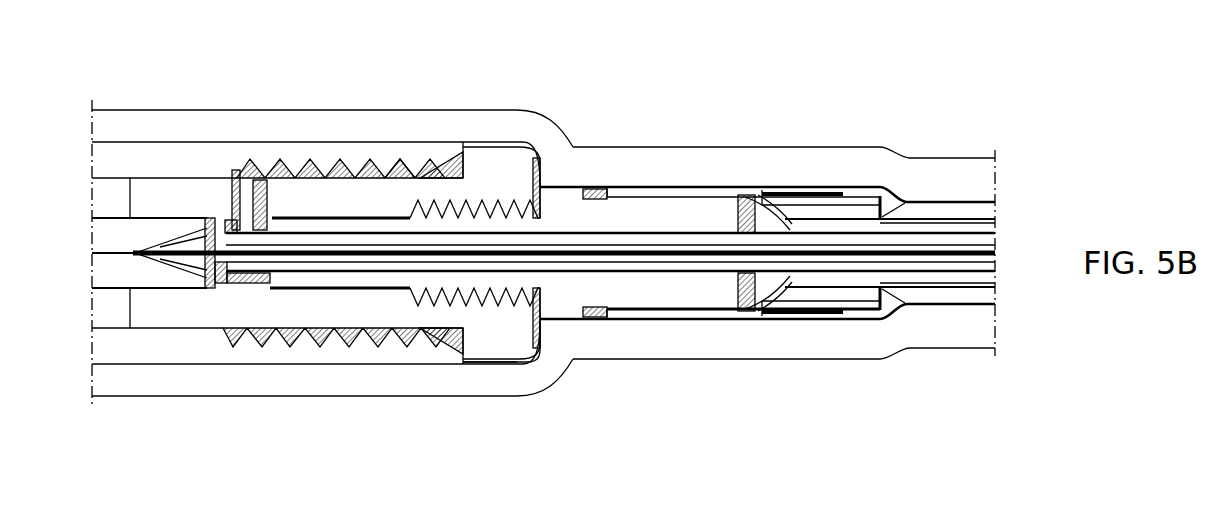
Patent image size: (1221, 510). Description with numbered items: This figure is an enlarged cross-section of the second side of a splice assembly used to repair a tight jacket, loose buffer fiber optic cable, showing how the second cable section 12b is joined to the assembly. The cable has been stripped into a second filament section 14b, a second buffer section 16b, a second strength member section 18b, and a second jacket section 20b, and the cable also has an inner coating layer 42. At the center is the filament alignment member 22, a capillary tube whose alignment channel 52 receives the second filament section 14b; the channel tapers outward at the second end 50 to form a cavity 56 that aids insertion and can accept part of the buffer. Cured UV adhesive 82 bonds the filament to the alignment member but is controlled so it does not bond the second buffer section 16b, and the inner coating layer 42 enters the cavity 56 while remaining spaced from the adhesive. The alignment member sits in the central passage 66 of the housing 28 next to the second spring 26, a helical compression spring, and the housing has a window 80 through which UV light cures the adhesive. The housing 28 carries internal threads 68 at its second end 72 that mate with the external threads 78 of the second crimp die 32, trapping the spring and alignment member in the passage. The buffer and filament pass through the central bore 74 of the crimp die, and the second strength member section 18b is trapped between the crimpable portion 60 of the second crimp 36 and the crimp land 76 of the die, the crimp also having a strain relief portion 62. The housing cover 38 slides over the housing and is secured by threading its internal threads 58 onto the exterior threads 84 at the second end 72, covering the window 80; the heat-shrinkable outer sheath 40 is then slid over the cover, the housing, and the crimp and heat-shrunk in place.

The second cable section 12b is at (983, 242).
The second filament section 14b is at (103, 252).
The second buffer section 16b is at (307, 263).
The second strength member section 18b is at (895, 228).
The second jacket section 20b is at (955, 218).
The filament alignment member 22 is at (148, 225).
The second spring 26 is at (220, 248).
The housing 28 is at (310, 200).
The second crimp die 32 is at (563, 208).
The second crimp 36 is at (847, 197).
The housing cover 38 is at (353, 155).
The outer sheath 40 is at (767, 167).
The inner coating layer 42 is at (195, 250).
The second end 50 is at (178, 260).
The alignment channel 52 is at (113, 248).
The cavity 56 is at (167, 263).
The internal threads 58 is at (387, 153).
The crimpable portion 60 is at (687, 187).
The strain relief portion 62 is at (927, 210).
The central passage 66 is at (130, 290).
The internal threads 68 is at (475, 197).
The second end 72 is at (547, 323).
The central bore 74 is at (677, 270).
The crimp land 76 is at (647, 220).
The external threads 78 is at (510, 220).
The window 80 is at (183, 194).
The cured UV adhesive 82 is at (157, 257).
The exterior threads 84 is at (398, 180).